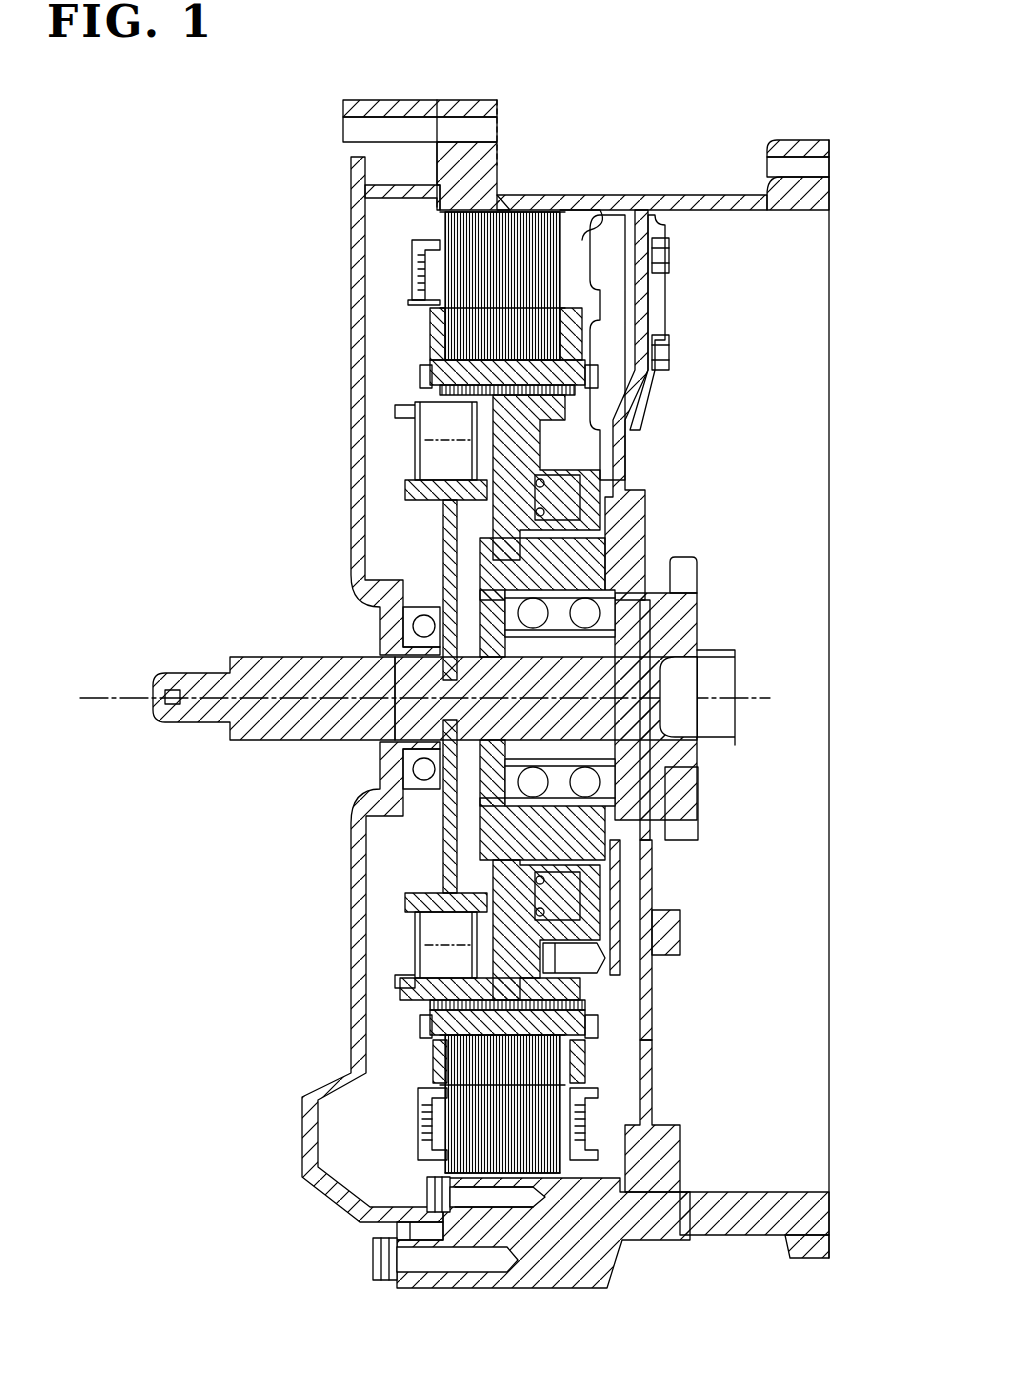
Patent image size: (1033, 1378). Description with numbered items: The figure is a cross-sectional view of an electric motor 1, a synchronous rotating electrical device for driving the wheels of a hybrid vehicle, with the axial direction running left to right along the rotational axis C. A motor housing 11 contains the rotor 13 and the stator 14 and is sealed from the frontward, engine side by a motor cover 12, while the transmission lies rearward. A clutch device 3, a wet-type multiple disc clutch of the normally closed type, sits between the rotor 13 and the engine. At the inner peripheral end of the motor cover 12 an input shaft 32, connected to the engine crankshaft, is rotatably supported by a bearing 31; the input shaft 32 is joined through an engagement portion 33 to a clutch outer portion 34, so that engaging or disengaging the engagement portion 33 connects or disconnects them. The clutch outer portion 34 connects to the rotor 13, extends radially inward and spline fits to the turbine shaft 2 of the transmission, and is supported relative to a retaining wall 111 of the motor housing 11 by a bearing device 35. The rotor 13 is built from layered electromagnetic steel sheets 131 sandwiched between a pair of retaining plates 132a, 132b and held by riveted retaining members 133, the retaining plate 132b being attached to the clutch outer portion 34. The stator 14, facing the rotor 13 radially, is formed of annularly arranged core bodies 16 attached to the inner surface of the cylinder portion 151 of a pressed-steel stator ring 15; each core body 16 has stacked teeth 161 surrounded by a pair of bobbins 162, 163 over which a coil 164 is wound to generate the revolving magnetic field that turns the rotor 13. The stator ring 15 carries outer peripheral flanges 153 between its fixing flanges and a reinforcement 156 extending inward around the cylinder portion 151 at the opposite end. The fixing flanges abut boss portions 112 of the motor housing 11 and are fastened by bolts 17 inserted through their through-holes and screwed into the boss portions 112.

The electric motor 1 is at (552, 130).
The turbine shaft 2 is at (695, 640).
The clutch device 3 is at (385, 428).
The motor housing 11 is at (462, 103).
The motor cover 12 is at (345, 152).
The rotor 13 is at (432, 325).
The stator 14 is at (578, 215).
The stator ring 15 is at (545, 210).
The core bodies 16 is at (437, 265).
The bolts 17 is at (400, 1195).
The bearing 31 is at (400, 600).
The input shaft 32 is at (255, 660).
The engagement portion 33 is at (430, 445).
The clutch outer portion 34 is at (632, 412).
The bearing device 35 is at (640, 577).
The retaining wall 111 is at (620, 460).
The boss portions 112 is at (420, 1160).
The electromagnetic steel sheets 131 is at (655, 318).
The retaining plate 132a is at (437, 340).
The retaining plate 132b is at (660, 345).
The retaining members 133 is at (440, 370).
The cylinder portion 151 is at (645, 1236).
The outer peripheral flanges 153 is at (445, 212).
The reinforcement 156 is at (635, 1180).
The teeth 161 is at (660, 255).
The bobbin 162 is at (440, 1090).
The bobbin 163 is at (610, 1085).
The coil 164 is at (425, 1115).